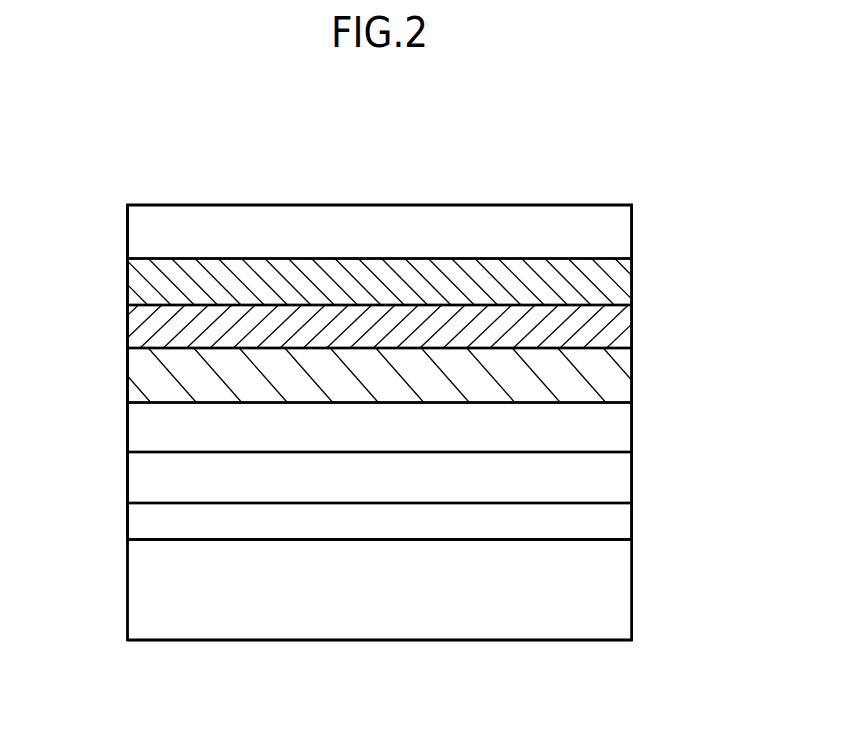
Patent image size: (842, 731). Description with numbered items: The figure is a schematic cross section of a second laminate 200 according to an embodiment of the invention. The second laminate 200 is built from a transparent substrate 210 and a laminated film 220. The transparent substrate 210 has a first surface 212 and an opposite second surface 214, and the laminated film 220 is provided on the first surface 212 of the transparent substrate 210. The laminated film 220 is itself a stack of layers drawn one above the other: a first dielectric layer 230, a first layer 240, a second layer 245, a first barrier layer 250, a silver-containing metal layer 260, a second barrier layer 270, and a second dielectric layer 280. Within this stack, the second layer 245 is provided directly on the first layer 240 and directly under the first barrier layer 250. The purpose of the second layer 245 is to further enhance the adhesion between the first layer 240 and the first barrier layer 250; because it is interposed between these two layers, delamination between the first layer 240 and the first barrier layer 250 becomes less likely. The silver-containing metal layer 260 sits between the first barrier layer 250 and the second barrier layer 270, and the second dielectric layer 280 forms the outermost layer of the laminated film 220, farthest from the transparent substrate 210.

The second laminate 200 is at (634, 181).
The transparent substrate 210 is at (607, 590).
The first surface 212 is at (150, 552).
The second surface 214 is at (148, 628).
The laminated film 220 is at (718, 210).
The first dielectric layer 230 is at (607, 523).
The first layer 240 is at (607, 479).
The second layer 245 is at (607, 429).
The first barrier layer 250 is at (607, 376).
The silver-containing metal layer 260 is at (608, 329).
The second barrier layer 270 is at (608, 283).
The second dielectric layer 280 is at (607, 232).